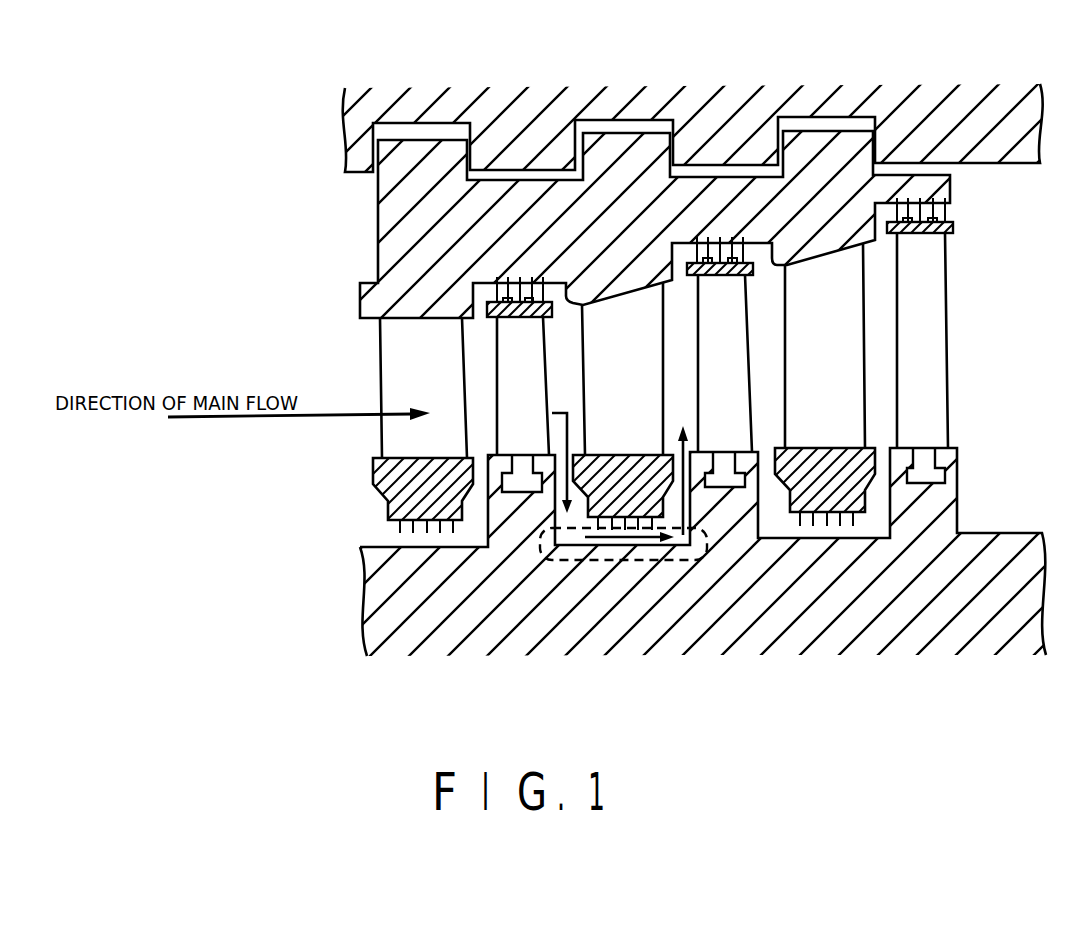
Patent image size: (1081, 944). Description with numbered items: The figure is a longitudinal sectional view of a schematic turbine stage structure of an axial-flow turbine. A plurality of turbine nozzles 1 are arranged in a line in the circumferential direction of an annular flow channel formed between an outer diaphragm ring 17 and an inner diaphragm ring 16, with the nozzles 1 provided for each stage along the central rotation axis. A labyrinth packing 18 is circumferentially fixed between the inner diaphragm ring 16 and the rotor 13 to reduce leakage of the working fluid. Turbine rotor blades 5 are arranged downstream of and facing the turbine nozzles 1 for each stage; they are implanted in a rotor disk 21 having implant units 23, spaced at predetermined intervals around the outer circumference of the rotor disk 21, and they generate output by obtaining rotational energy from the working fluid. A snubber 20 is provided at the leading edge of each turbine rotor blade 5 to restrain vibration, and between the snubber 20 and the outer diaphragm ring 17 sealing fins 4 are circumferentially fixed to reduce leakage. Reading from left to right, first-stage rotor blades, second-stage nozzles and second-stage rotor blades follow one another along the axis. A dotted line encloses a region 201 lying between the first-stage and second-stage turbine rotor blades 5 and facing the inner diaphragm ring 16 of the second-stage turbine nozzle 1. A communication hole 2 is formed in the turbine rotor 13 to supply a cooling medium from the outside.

The turbine nozzle 1 is at (607, 384).
The communication hole 2 is at (482, 294).
The sealing fin 4 is at (727, 275).
The turbine rotor blade 5 is at (520, 386).
The rotor 13 is at (387, 610).
The inner diaphragm ring 16 is at (398, 511).
The outer diaphragm ring 17 is at (834, 225).
The labyrinth packing 18 is at (858, 526).
The snubber 20 is at (955, 225).
The rotor disk 21 is at (937, 498).
The implant unit 23 is at (925, 458).
The region 201 is at (638, 561).